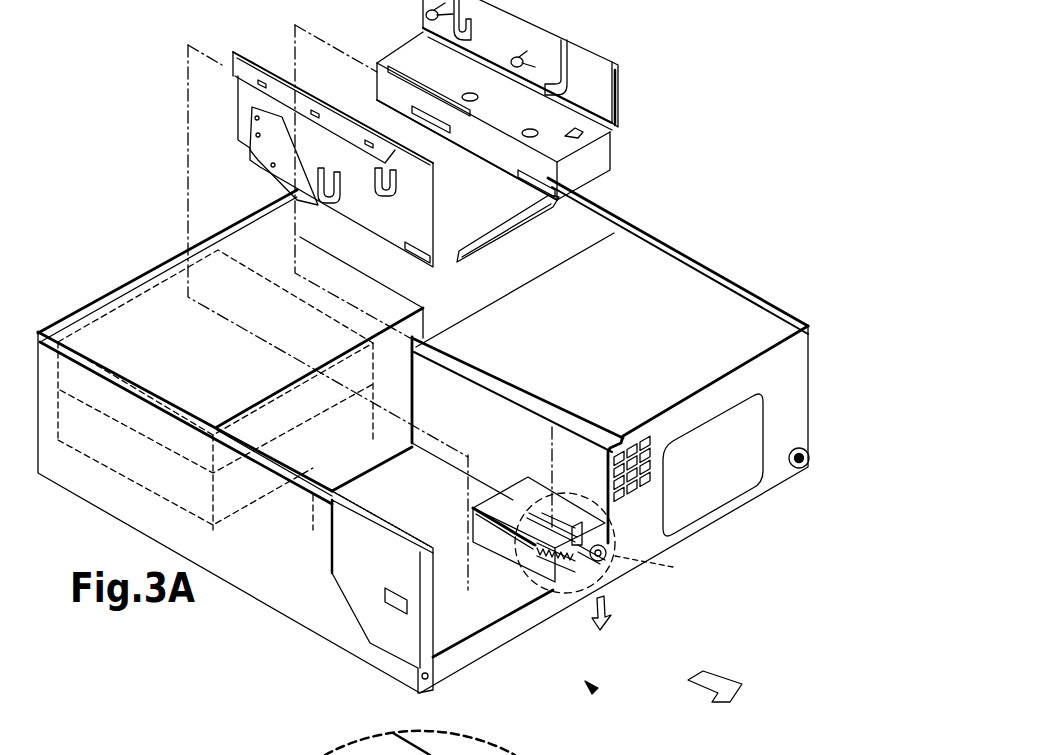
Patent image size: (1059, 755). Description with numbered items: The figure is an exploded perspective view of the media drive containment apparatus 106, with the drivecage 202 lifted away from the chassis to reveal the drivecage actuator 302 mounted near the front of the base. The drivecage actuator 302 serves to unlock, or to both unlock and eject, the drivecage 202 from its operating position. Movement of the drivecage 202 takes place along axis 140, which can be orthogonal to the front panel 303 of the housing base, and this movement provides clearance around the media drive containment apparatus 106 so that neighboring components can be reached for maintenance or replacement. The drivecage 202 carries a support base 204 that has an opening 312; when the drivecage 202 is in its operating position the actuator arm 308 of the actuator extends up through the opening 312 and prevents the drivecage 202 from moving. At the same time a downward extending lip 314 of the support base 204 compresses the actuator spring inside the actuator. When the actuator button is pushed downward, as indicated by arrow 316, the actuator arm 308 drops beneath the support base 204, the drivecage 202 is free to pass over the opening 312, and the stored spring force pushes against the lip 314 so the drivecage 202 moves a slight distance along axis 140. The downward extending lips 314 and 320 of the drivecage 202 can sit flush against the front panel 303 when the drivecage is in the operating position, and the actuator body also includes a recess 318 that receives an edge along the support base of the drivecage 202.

The drivecage 202 is at (646, 96).
The support base 204 is at (570, 167).
The opening 312 is at (585, 137).
The downward extending lip 314 is at (566, 182).
The downward extending lip 320 is at (503, 232).
The actuator arm 308 is at (580, 524).
The recess 318 is at (497, 530).
The drivecage actuator 302 is at (629, 592).
The front panel 303 is at (460, 652).
The arrow 316 is at (590, 615).
The media drive containment apparatus 106 is at (595, 691).
The axis 140 is at (698, 686).